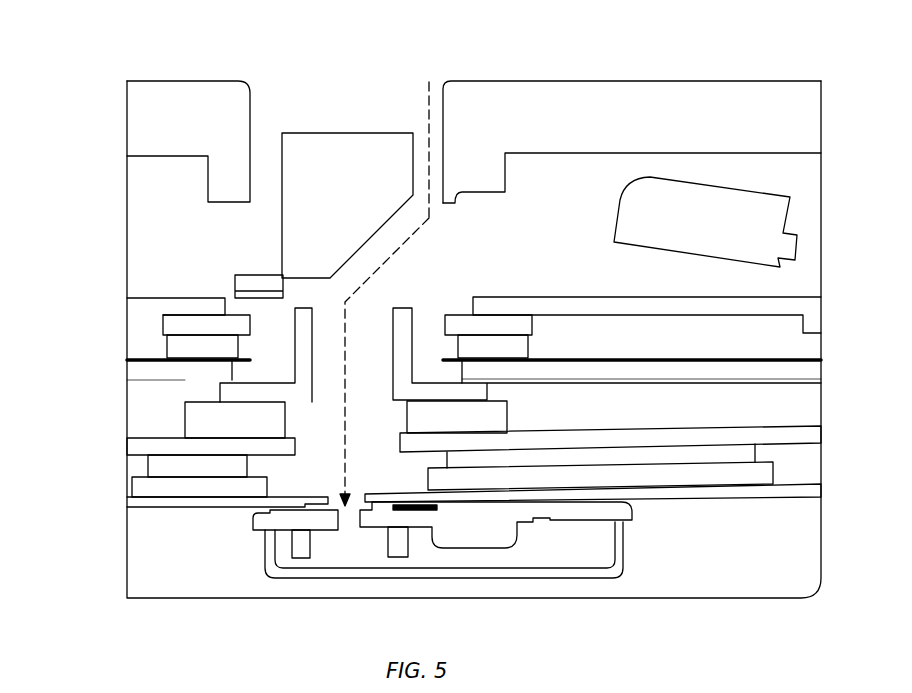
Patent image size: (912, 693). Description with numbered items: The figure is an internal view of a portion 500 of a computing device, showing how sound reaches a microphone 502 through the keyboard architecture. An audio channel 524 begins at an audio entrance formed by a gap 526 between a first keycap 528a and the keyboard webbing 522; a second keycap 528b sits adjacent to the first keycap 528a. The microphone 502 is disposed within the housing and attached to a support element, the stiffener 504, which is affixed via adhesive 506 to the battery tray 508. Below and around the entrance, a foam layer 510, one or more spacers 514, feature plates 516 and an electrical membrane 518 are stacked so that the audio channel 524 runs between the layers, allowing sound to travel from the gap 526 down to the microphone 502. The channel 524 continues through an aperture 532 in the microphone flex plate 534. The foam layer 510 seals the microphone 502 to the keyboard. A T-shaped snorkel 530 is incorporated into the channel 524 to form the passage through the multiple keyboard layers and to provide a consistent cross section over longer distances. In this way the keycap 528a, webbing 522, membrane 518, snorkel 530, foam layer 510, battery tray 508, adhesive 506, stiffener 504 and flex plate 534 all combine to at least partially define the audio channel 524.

The portion of a computing device 500 is at (192, 44).
The microphone 502 is at (636, 563).
The stiffener 504 is at (126, 492).
The adhesive 506 is at (148, 463).
The battery tray 508 is at (126, 452).
The foam layer 510 is at (185, 425).
The spacer 514 is at (240, 347).
The feature plate 516 is at (163, 325).
The electrical membrane 518 is at (126, 308).
The webbing 522 is at (365, 191).
The audio channel 524 is at (396, 256).
The gap 526 is at (413, 120).
The first keycap 528a is at (660, 128).
The second keycap 528b is at (208, 128).
The T-shaped snorkel 530 is at (392, 387).
The aperture 532 is at (322, 512).
The microphone flex plate 534 is at (126, 507).